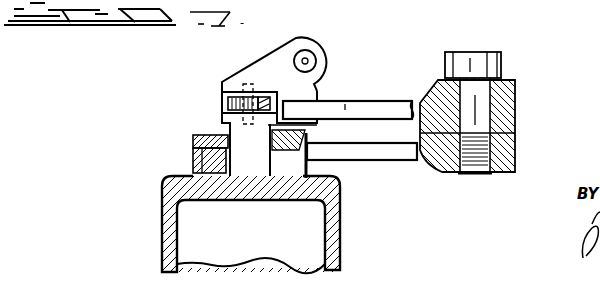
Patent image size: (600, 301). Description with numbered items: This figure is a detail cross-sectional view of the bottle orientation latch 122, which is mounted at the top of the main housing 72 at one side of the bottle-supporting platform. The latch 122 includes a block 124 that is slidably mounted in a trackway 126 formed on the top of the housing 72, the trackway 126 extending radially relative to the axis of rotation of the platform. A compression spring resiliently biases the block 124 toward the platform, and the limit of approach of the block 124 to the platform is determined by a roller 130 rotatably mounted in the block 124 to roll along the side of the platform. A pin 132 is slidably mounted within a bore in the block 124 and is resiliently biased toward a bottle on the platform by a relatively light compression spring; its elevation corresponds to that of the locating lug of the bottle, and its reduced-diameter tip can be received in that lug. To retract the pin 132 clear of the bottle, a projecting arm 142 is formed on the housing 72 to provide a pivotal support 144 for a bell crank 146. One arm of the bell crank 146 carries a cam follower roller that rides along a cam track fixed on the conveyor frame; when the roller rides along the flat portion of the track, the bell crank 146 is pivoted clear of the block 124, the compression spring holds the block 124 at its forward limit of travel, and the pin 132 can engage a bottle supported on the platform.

The main housing 72 is at (341, 244).
The bottle orientation latch 122 is at (176, 117).
The block 124 is at (205, 166).
The trackway 126 is at (197, 148).
The roller 130 is at (226, 102).
The pin 132 is at (316, 55).
The projecting arm 142 is at (392, 147).
The pivotal support 144 is at (494, 63).
The bell crank 146 is at (403, 66).